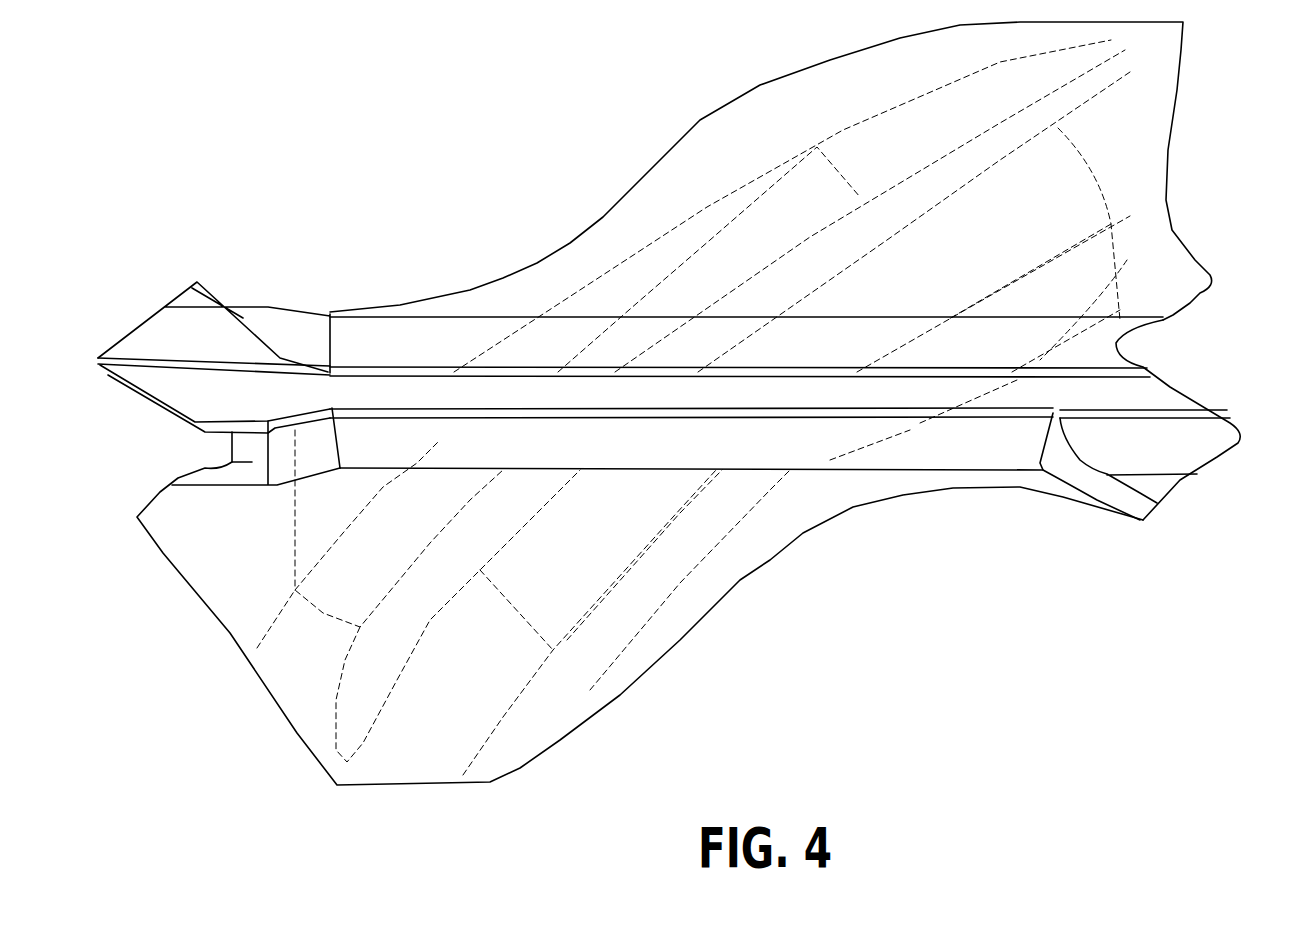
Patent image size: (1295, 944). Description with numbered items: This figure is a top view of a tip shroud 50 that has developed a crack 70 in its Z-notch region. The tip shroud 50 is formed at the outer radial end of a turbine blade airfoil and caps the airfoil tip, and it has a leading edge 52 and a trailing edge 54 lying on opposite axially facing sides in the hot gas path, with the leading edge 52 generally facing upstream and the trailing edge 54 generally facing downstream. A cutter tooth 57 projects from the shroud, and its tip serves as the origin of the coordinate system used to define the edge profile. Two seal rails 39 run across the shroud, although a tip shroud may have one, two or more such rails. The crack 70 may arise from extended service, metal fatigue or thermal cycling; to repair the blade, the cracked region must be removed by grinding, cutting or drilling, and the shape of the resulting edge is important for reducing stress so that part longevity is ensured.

The tip shroud 50 is at (368, 121).
The leading edge 52 is at (722, 600).
The trailing edge 54 is at (708, 108).
The cutter tooth 57 is at (98, 358).
The seal rails 39 is at (1152, 395).
The crack 70 is at (242, 462).